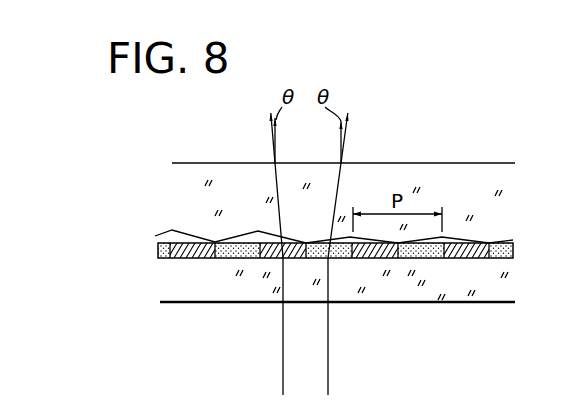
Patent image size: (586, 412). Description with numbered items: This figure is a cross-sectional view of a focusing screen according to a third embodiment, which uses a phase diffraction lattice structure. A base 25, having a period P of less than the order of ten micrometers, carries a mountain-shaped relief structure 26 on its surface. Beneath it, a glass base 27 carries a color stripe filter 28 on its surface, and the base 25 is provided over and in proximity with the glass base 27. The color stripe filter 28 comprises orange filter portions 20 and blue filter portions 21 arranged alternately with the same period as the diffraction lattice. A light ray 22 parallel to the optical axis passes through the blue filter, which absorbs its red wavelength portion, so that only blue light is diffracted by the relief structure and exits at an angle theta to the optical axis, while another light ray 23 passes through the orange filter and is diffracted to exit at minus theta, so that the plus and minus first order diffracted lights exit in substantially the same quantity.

The orange filter portions 20 is at (177, 258).
The blue filter portions 21 is at (230, 258).
The light ray 22 is at (329, 360).
The light ray 23 is at (282, 358).
The base 25 is at (510, 200).
The mountain-shaped relief structure 26 is at (467, 240).
The glass base 27 is at (507, 283).
The color stripe filter 28 is at (368, 269).